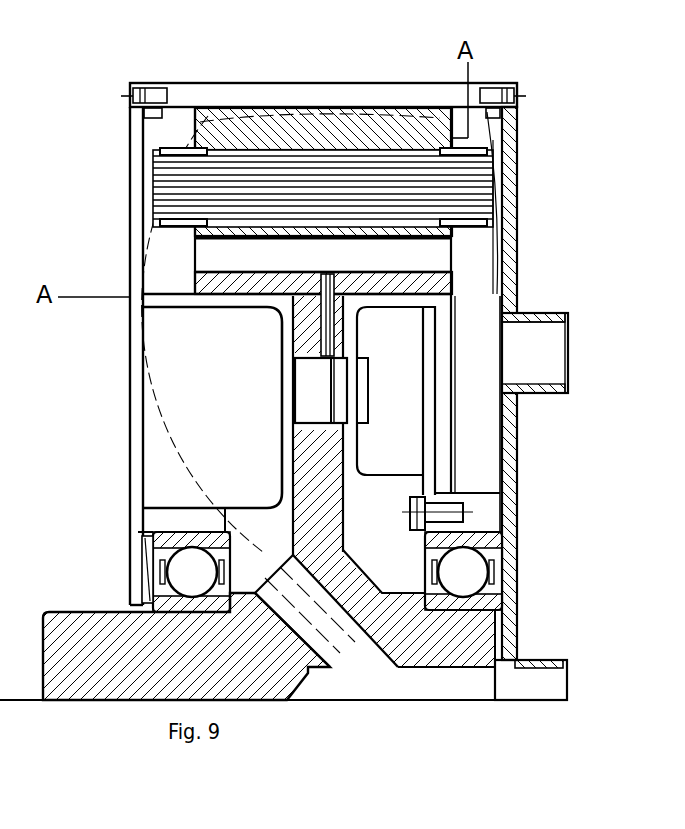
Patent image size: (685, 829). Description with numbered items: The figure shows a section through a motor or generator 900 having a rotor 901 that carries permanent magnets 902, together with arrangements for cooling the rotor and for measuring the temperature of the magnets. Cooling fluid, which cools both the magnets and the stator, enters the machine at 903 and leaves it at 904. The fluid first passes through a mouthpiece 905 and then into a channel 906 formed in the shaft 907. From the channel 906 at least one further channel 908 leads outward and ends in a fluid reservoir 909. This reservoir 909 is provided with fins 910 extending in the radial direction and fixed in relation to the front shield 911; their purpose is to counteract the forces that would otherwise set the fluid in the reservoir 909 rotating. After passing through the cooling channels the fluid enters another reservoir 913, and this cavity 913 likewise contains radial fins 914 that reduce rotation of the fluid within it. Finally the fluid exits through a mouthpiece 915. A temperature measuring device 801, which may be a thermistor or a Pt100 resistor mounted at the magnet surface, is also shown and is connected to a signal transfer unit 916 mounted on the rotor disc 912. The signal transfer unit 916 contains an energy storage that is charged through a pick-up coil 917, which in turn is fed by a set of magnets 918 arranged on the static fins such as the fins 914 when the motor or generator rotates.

The motor or generator 900 is at (323, 293).
The temperature measuring device 801 is at (322, 274).
The rotor 901 is at (437, 283).
The permanent magnets 902 is at (290, 252).
The cooling fluid inlet 903 is at (400, 685).
The cooling fluid outlet 904 is at (545, 350).
The mouthpiece 905 is at (540, 660).
The channel 906 is at (478, 692).
The shaft 907 is at (152, 678).
The further channel 908 is at (147, 568).
The fluid reservoir 909 is at (292, 484).
The fins 910 is at (240, 345).
The front shield 911 is at (140, 438).
The rotor disc 912 is at (225, 473).
The reservoir 913 is at (487, 443).
The radial fins 914 is at (410, 425).
The mouthpiece 915 is at (568, 320).
The signal transfer unit 916 is at (313, 402).
The pick-up coil 917 is at (342, 387).
The magnets 918 is at (363, 400).